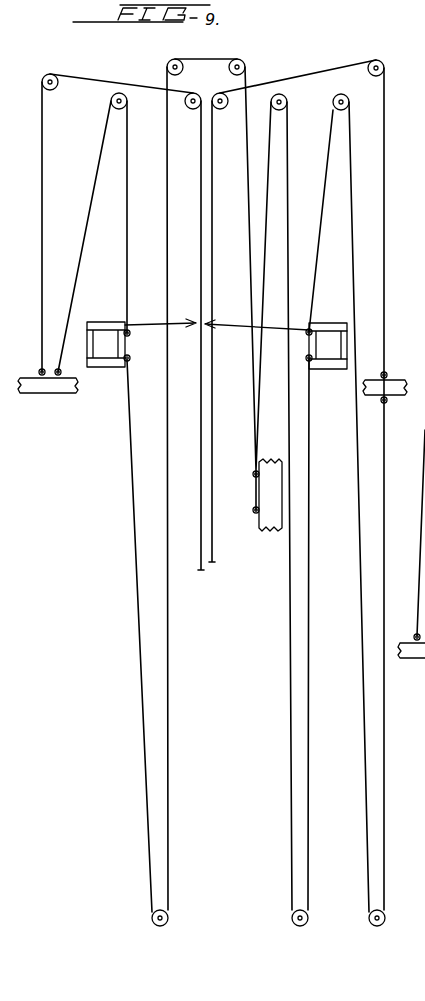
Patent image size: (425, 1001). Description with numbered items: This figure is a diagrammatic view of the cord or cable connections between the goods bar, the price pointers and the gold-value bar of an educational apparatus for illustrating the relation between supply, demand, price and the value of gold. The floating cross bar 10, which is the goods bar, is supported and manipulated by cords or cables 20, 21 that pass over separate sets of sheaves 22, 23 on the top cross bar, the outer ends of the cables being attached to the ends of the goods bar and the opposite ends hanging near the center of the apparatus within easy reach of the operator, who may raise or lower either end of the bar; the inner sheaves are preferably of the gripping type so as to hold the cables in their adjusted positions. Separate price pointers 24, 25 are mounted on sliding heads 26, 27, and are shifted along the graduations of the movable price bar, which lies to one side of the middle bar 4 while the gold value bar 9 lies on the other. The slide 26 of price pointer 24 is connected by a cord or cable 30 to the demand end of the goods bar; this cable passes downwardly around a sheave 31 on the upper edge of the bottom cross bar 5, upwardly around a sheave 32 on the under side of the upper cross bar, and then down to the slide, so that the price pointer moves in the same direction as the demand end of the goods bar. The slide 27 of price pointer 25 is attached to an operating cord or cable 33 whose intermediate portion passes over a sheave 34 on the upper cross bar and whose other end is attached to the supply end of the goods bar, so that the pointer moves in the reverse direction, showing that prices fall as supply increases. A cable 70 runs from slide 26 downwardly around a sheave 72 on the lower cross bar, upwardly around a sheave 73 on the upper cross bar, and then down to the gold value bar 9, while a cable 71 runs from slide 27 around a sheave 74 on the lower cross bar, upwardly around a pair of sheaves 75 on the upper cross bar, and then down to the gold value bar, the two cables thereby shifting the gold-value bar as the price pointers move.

The middle bar 4 is at (411, 562).
The bottom cross bar 5 is at (413, 108).
The gold value bar 9 is at (271, 530).
The floating cross bar 10 is at (55, 395).
The cord or cable 20 is at (385, 193).
The cord or cable 21 is at (44, 172).
The sheave 22 is at (222, 109).
The sheave 23 is at (50, 74).
The price pointer 24 is at (281, 330).
The price pointer 25 is at (155, 326).
The sliding head 26 is at (326, 323).
The sliding head 27 is at (100, 314).
The cord or cable 30 is at (353, 230).
The sheave 31 is at (377, 926).
The sheave 32 is at (349, 102).
The operating cord or cable 33 is at (127, 265).
The sheave 34 is at (111, 101).
The cable 70 is at (296, 593).
The cable 71 is at (165, 507).
The sheave 72 is at (300, 926).
The sheave 73 is at (288, 102).
The sheave 74 is at (160, 926).
The pair of sheaves 75 is at (230, 62).